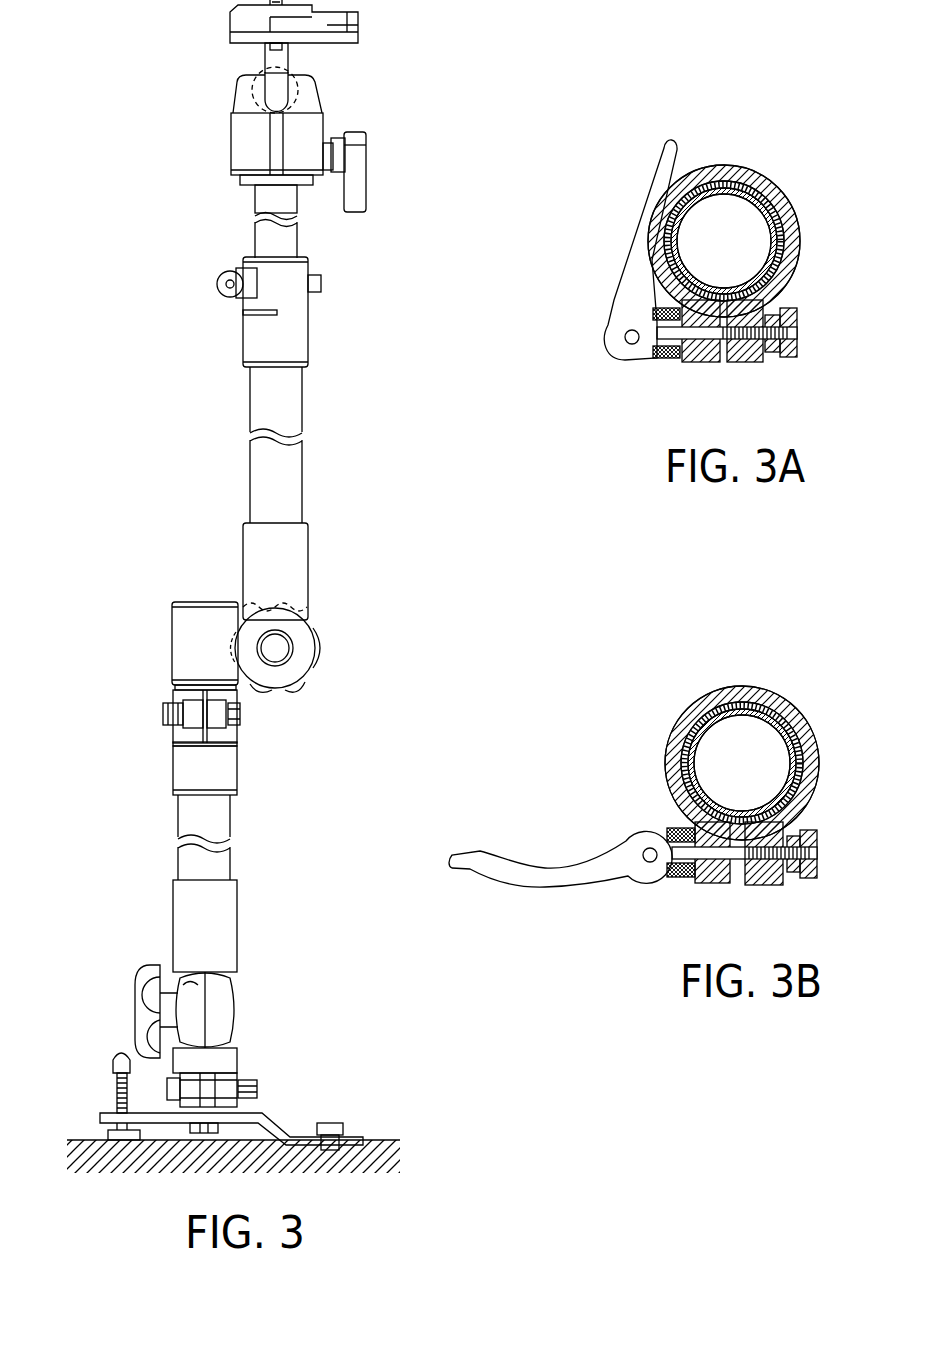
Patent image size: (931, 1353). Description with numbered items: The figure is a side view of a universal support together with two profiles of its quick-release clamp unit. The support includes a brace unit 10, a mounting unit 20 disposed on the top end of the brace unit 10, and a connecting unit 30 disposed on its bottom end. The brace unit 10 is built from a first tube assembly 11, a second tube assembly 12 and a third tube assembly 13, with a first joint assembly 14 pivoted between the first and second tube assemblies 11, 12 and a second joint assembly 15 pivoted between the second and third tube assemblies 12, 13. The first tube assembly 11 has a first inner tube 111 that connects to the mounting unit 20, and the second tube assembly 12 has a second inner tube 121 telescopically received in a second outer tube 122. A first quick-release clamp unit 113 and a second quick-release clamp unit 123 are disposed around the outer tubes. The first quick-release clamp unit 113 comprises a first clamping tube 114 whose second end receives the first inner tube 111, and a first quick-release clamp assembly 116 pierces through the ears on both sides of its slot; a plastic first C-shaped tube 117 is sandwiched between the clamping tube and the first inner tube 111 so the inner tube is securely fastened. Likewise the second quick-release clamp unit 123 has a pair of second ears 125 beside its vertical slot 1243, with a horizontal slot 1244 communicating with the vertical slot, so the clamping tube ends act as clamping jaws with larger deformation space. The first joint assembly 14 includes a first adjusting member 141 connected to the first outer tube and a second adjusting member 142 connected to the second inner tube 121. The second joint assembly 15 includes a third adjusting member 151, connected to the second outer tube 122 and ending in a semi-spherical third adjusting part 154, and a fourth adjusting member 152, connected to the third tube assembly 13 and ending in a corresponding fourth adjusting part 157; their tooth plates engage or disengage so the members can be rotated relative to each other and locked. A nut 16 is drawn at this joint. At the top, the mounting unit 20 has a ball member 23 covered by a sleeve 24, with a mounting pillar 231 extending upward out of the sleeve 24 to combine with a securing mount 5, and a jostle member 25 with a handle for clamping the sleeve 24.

In FIG. 3, the securing mount 5 is at (385, 25).
In FIG. 3, the mounting pillar 231 is at (268, 58).
In FIG. 3, the ball member 23 is at (282, 92).
In FIG. 3, the sleeve 24 is at (310, 104).
In FIG. 3, the jostle member 25 is at (358, 140).
In FIG. 3, the mounting unit 20 is at (398, 171).
In FIG. 3, the first inner tube 111 is at (292, 242).
In FIG. 3, the first quick-release clamp unit 113 is at (196, 276).
In FIG. 3B, the first quick-release clamp unit 113 is at (695, 670).
In FIG. 3, the first tube assembly 11 is at (348, 337).
In FIG. 3, the first adjusting member 141 is at (283, 556).
In FIG. 3, the second adjusting member 142 is at (186, 633).
In FIG. 3, the brace unit 10 is at (450, 602).
In FIG. 3, the first joint assembly 14 is at (341, 645).
In FIG. 3, the vertical slot 1243 is at (203, 693).
In FIG. 3, the second quick-release clamp unit 123 is at (152, 715).
In FIG. 3, the horizontal slot 1244 is at (236, 744).
In FIG. 3, the second outer tube 122 is at (222, 812).
In FIG. 3, the second tube assembly 12 is at (298, 852).
In FIG. 3, the fourth adjusting part 157 is at (190, 993).
In FIG. 3, the third adjusting member 151 is at (225, 942).
In FIG. 3, the third adjusting part 154 is at (220, 1005).
In FIG. 3, the wing nut 16 is at (142, 1012).
In FIG. 3, the second joint assembly 15 is at (270, 1020).
In FIG. 3, the fourth adjusting member 152 is at (183, 1065).
In FIG. 3, the third tube assembly 13 is at (290, 1083).
In FIG. 3, the connecting unit 30 is at (384, 1113).
In FIG. 3A, the second inner tube 121 is at (707, 190).
In FIG. 3B, the second inner tube 121 is at (690, 733).
In FIG. 3A, the first clamping tube 114 is at (737, 173).
In FIG. 3B, the first clamping tube 114 is at (787, 710).
In FIG. 3A, the first C-shaped tube 117 is at (780, 193).
In FIG. 3B, the first C-shaped tube 117 is at (753, 700).
In FIG. 3A, the first quick-release clamp assembly 116 is at (592, 336).
In FIG. 3B, the first quick-release clamp assembly 116 is at (616, 815).
In FIG. 3A, the second ears 125 is at (697, 350).
In FIG. 3B, the second ears 125 is at (712, 873).